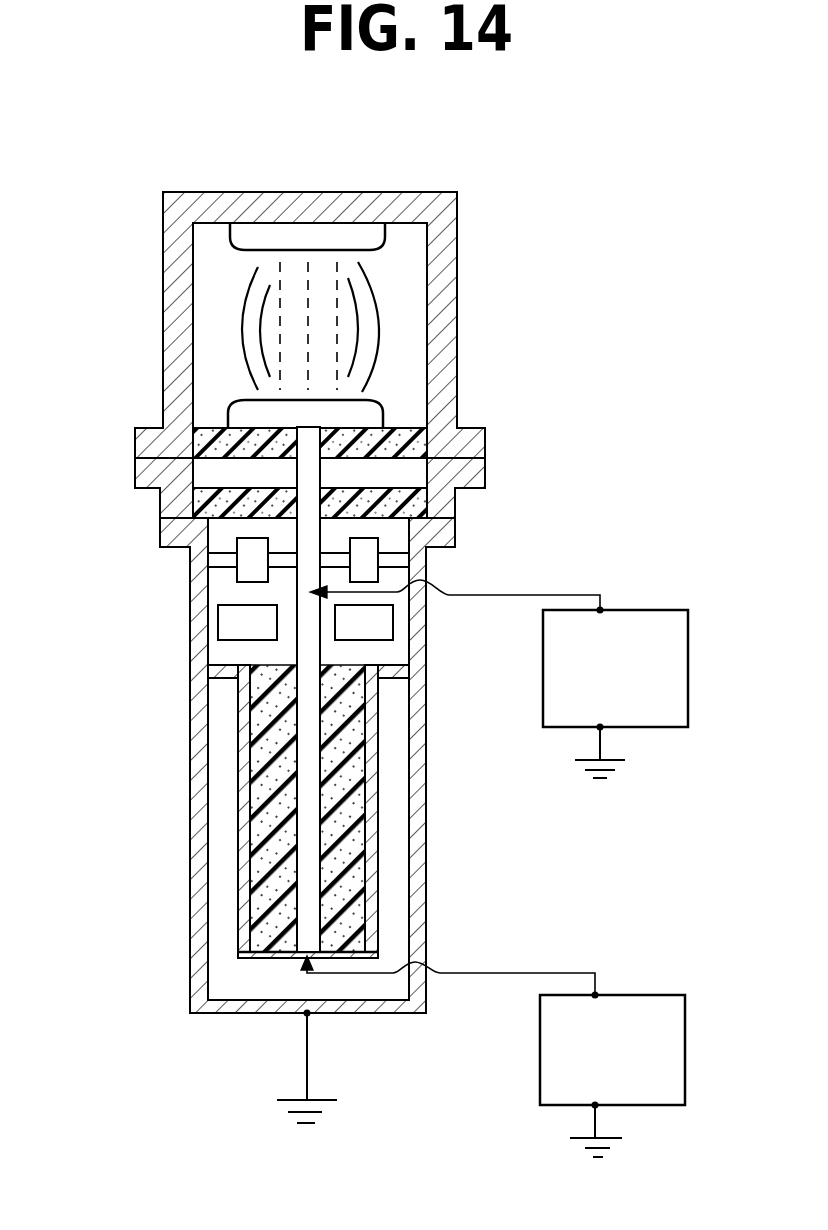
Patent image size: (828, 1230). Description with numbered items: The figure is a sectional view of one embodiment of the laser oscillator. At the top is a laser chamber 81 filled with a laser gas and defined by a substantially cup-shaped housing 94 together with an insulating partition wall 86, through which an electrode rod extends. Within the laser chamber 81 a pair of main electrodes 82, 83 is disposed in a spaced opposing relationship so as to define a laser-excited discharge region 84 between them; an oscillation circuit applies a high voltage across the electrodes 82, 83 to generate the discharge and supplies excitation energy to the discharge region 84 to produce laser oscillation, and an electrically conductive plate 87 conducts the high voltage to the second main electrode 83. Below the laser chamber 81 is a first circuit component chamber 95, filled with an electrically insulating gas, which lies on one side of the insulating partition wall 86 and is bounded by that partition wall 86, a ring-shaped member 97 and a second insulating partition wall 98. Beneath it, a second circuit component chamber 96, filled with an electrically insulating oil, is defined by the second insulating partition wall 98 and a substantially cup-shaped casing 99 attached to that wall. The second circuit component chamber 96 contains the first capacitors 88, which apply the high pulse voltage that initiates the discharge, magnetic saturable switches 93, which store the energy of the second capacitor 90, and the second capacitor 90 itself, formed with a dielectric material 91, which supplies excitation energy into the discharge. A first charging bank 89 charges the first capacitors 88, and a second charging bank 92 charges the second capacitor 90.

The laser chamber 81 is at (413, 288).
The first main electrode 82 is at (313, 235).
The second main electrode 83 is at (365, 415).
The laser-excited discharge region 84 is at (267, 340).
The insulating partition wall 86 is at (420, 442).
The electrically conductive plate 87 is at (303, 532).
The first capacitor 88 is at (247, 575).
The first charging bank 89 is at (624, 610).
The second capacitor 90 is at (240, 743).
The dielectric material 91 is at (250, 823).
The second charging bank 92 is at (615, 995).
The magnetic saturable switch 93 is at (212, 664).
The cup-shaped housing 94 is at (457, 325).
The first circuit component chamber 95 is at (210, 473).
The second circuit component chamber 96 is at (232, 593).
The ring-shaped member 97 is at (477, 475).
The second insulating partition wall 98 is at (420, 500).
The cup-shaped casing 99 is at (427, 813).